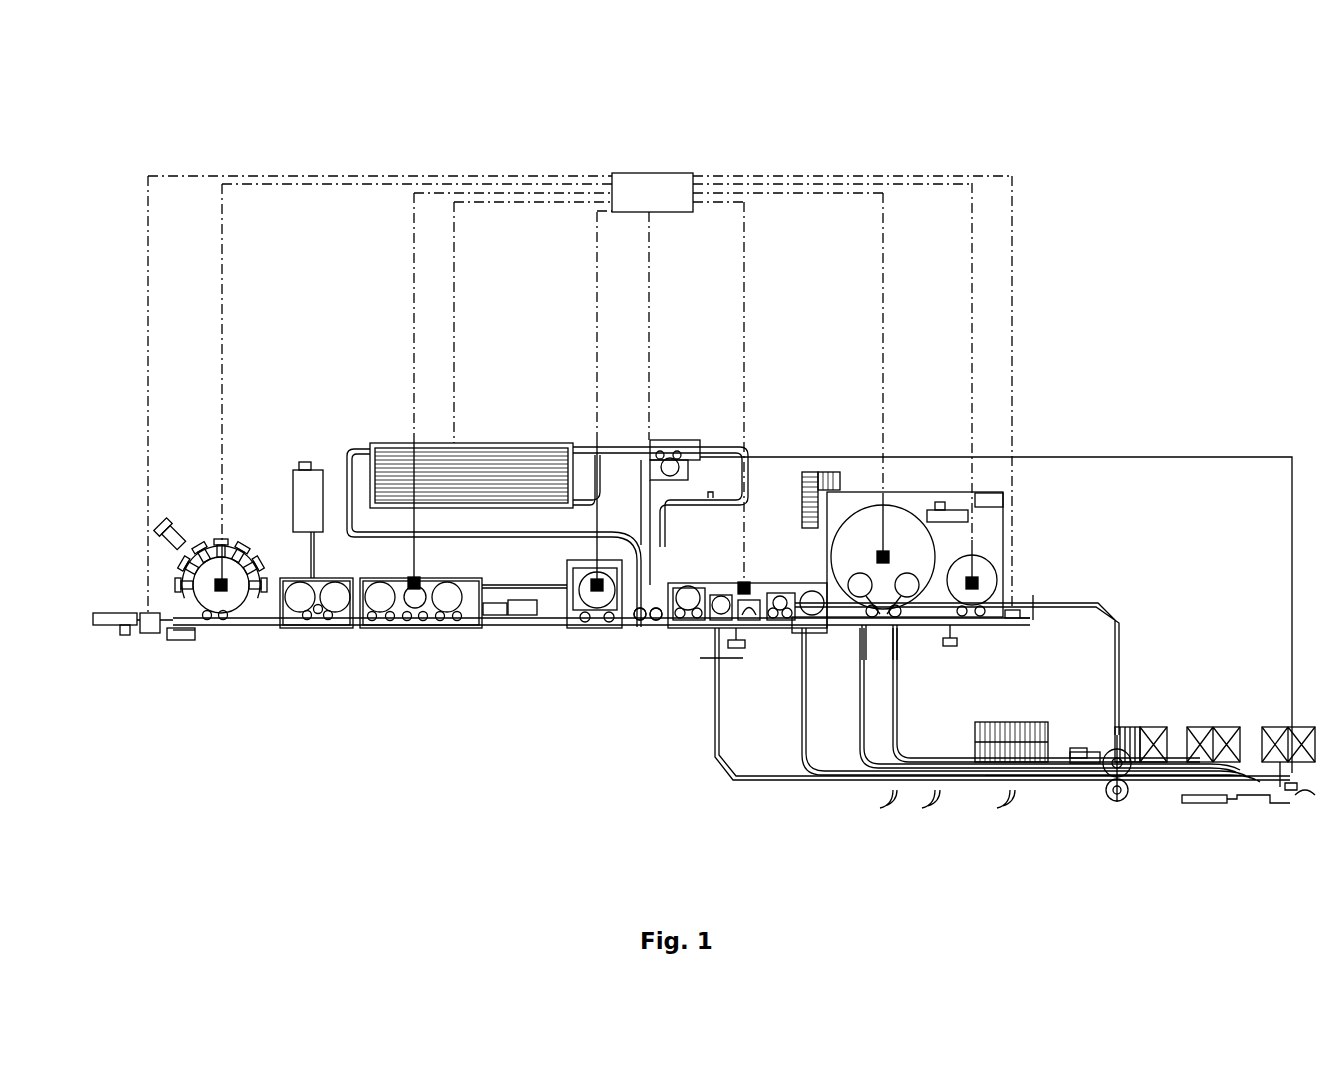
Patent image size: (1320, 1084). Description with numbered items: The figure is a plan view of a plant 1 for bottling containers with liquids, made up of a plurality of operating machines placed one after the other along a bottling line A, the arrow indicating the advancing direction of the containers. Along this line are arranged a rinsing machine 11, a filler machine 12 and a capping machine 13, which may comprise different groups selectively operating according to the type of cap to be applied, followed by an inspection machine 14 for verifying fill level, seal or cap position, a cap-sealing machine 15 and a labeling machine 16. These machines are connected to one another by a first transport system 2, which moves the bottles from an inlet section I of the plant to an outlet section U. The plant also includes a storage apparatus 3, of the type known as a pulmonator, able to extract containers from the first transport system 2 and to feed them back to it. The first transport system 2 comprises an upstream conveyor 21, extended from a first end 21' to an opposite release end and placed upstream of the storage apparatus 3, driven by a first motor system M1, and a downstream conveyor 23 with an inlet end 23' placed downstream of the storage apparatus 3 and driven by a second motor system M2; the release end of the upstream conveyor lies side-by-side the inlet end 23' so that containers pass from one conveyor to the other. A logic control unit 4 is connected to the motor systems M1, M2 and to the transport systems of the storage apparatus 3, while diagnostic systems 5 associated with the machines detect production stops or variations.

The plant for bottling containers with liquids 1 is at (1200, 170).
The first transport system 2 is at (330, 628).
The storage apparatus 3 is at (445, 437).
The logic control unit 4 is at (580, 393).
The diagnostic systems 5 is at (227, 580).
The rinsing machine 11 is at (980, 548).
The filler machine 12 is at (915, 502).
The capping machine 13 is at (780, 550).
The inspection machine 14 is at (605, 565).
The cap-sealing machine 15 is at (465, 567).
The labeling machine 16 is at (237, 512).
The upstream conveyor 21 is at (978, 633).
The first end 21' is at (1116, 765).
The downstream conveyor 23 is at (421, 655).
The inlet end 23' is at (615, 670).
The bottling line A is at (745, 658).
The inlet section I is at (1010, 630).
The first motor system M1 is at (1025, 632).
The second motor system M2 is at (143, 613).
The outlet section U is at (157, 642).